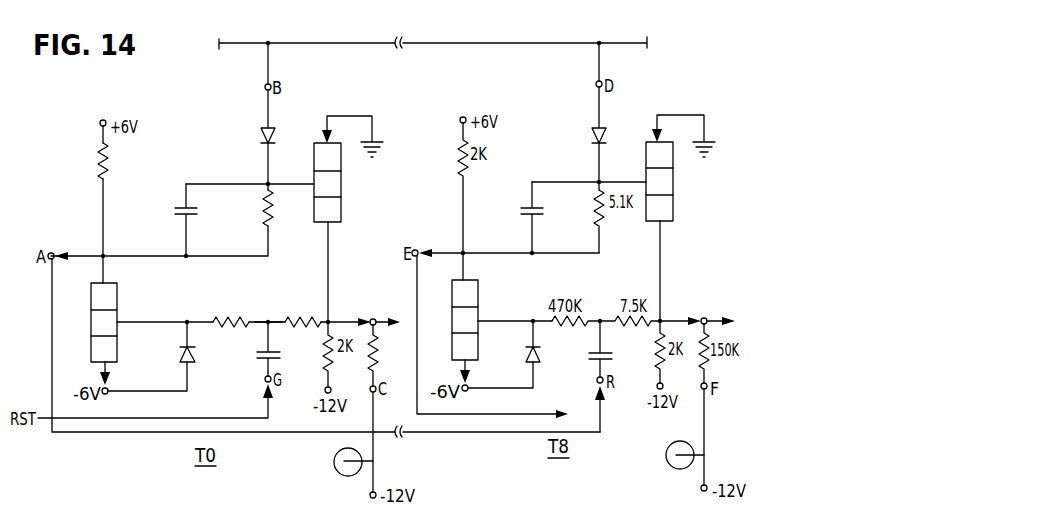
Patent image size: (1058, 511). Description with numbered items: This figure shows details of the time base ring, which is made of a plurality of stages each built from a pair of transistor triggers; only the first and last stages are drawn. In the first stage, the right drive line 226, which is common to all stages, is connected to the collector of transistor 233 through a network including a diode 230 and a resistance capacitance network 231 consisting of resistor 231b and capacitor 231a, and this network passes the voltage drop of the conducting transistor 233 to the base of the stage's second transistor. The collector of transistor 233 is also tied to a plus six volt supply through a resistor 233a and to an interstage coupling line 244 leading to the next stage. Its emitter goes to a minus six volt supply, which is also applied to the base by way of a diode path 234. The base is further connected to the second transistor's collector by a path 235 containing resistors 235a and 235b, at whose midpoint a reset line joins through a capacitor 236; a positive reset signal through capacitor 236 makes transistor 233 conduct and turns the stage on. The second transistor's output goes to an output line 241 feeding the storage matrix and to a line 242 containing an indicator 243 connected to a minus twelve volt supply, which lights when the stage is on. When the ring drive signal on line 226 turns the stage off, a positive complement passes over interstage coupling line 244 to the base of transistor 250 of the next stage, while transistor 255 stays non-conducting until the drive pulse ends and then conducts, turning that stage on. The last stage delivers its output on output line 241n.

The right drive line 226 is at (254, 44).
The diode 230 is at (262, 135).
The resistance capacitance network 231 is at (240, 226).
The capacitor 231a is at (178, 210).
The resistor 231b is at (272, 229).
The transistor 233 is at (118, 352).
The resistor 233a is at (97, 157).
The diode path 234 is at (196, 352).
The path 235 is at (264, 326).
The resistor 235a is at (248, 317).
The resistor 235b is at (306, 325).
The capacitor 236 is at (262, 360).
The output line 241 is at (381, 318).
The output line 241n is at (713, 316).
The line 242 is at (374, 330).
The indicator 243 is at (334, 459).
The interstage coupling line 244 is at (78, 254).
The transistor 250 is at (480, 312).
The transistor 255 is at (673, 192).